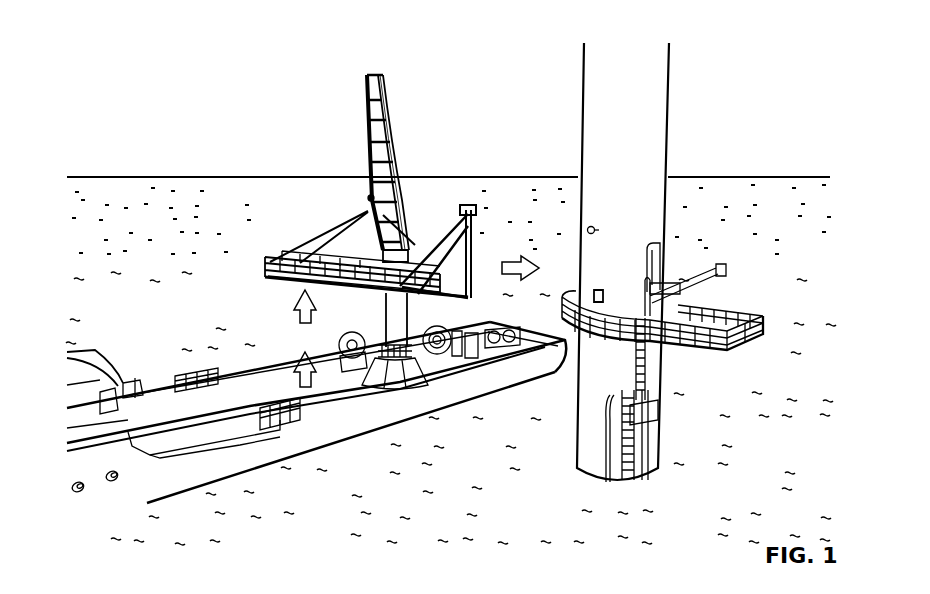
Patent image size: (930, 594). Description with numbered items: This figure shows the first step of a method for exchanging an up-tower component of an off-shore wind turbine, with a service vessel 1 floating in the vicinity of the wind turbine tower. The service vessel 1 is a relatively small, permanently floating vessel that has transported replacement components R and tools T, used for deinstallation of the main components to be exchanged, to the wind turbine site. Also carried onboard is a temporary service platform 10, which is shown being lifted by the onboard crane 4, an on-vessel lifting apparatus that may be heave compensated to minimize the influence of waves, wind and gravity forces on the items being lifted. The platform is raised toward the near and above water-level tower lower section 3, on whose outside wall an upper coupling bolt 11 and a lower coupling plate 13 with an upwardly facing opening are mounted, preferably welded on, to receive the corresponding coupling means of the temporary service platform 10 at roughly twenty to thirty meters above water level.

The service vessel 1 is at (152, 485).
The tower lower section 3 is at (645, 92).
The crane 4 is at (388, 95).
The temporary service platform 10 is at (268, 288).
The upper coupling bolt 11 is at (585, 229).
The lower coupling plate 13 is at (580, 296).
The replacement components R is at (350, 356).
The tools T is at (432, 352).